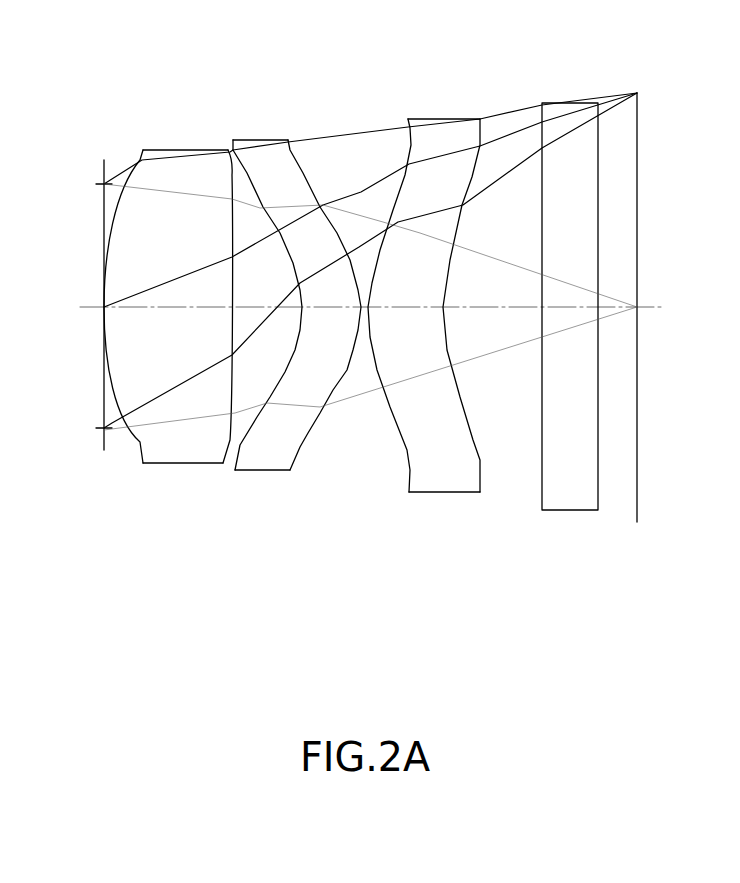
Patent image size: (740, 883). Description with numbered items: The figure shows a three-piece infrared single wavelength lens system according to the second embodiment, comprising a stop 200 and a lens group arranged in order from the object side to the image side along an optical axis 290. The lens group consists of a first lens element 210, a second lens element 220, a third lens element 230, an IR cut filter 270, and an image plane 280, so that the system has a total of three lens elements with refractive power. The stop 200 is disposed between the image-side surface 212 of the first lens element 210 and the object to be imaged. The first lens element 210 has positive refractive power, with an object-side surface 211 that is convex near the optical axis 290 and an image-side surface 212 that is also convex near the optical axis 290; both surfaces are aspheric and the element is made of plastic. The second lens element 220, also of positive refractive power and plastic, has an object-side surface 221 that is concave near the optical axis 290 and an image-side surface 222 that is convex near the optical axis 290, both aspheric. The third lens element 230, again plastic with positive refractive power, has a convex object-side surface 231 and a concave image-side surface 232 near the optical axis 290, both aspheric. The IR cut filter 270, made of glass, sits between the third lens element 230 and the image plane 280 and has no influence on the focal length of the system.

The stop 200 is at (94, 165).
The first lens element 210 is at (168, 318).
The object-side surface 211 is at (136, 441).
The image-side surface 212 is at (231, 424).
The second lens element 220 is at (287, 314).
The object-side surface 221 is at (248, 432).
The image-side surface 222 is at (309, 432).
The third lens element 230 is at (427, 303).
The object-side surface 231 is at (391, 412).
The image-side surface 232 is at (481, 458).
The IR cut filter 270 is at (564, 91).
The image plane 280 is at (637, 415).
The optical axis 290 is at (85, 307).